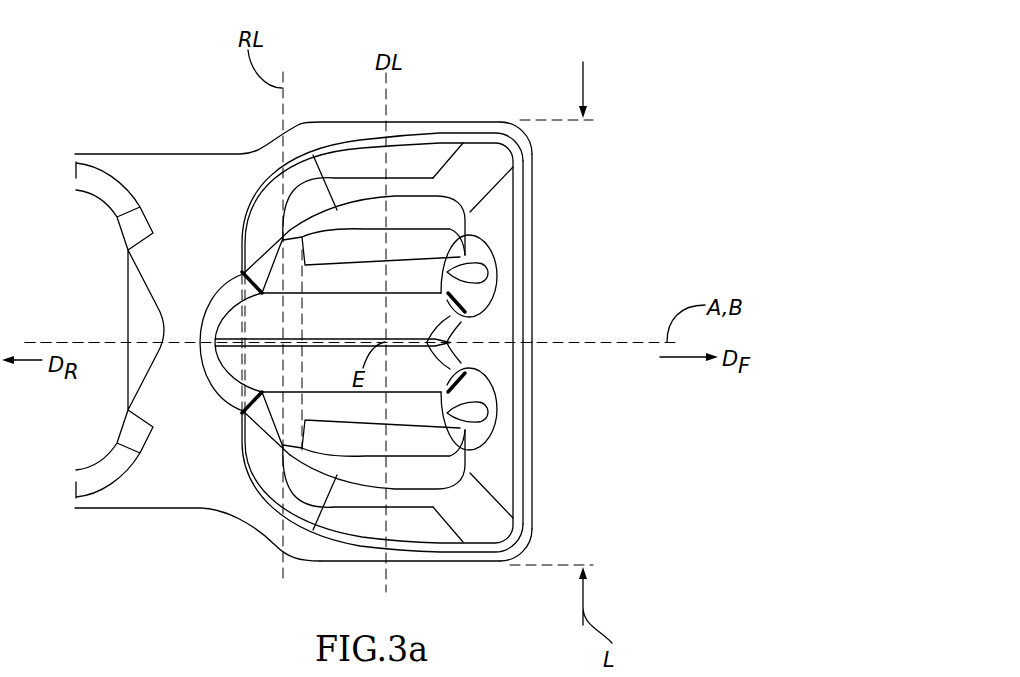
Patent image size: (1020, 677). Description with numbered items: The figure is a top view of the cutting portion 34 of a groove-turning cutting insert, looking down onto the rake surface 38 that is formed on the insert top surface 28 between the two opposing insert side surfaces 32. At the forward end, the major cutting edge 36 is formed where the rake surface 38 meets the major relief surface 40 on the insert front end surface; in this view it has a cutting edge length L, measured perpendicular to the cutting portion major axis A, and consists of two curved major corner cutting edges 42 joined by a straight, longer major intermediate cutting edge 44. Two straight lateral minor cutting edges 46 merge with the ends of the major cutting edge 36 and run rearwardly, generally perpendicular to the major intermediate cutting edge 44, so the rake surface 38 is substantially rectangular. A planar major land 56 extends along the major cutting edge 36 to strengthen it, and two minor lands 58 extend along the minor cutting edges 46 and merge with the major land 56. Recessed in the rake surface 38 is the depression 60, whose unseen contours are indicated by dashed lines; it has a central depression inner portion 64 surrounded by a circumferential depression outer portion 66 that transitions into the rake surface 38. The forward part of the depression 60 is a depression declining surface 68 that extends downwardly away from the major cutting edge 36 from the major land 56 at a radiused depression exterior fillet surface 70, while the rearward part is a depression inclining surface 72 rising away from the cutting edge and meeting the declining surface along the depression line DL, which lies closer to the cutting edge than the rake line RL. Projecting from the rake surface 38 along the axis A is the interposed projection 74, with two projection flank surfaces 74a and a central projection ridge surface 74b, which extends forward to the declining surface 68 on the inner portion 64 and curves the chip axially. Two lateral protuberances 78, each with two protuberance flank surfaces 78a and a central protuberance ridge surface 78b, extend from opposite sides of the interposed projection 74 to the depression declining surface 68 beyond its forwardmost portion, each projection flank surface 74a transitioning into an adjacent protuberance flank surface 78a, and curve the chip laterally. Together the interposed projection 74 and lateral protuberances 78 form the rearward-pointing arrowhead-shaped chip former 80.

The insert top surface 28 is at (183, 162).
The insert side surfaces 32 is at (116, 153).
The cutting portion 34 is at (567, 55).
The major cutting edge 36 is at (545, 310).
The rake surface 38 is at (477, 315).
The major relief surface 40 is at (552, 393).
The major corner cutting edges 42 is at (530, 137).
The major intermediate cutting edge 44 is at (533, 333).
The minor cutting edges 46 is at (433, 123).
The major land 56 is at (520, 228).
The minor lands 58 is at (443, 342).
The depression 60 is at (505, 487).
The depression inner portion 64 is at (377, 342).
The depression outer portion 66 is at (473, 177).
The depression declining surface 68 is at (466, 342).
The depression exterior fillet surface 70 is at (527, 183).
The depression inclining surface 72 is at (347, 342).
The interposed projection 74 is at (248, 320).
The projection flank surfaces 74a is at (351, 343).
The central projection ridge surface 74b is at (480, 383).
The lateral protuberances 78 is at (352, 262).
The protuberance flank surfaces 78a is at (617, 452).
The central protuberance ridge surface 78b is at (520, 256).
The chip former 80 is at (186, 452).